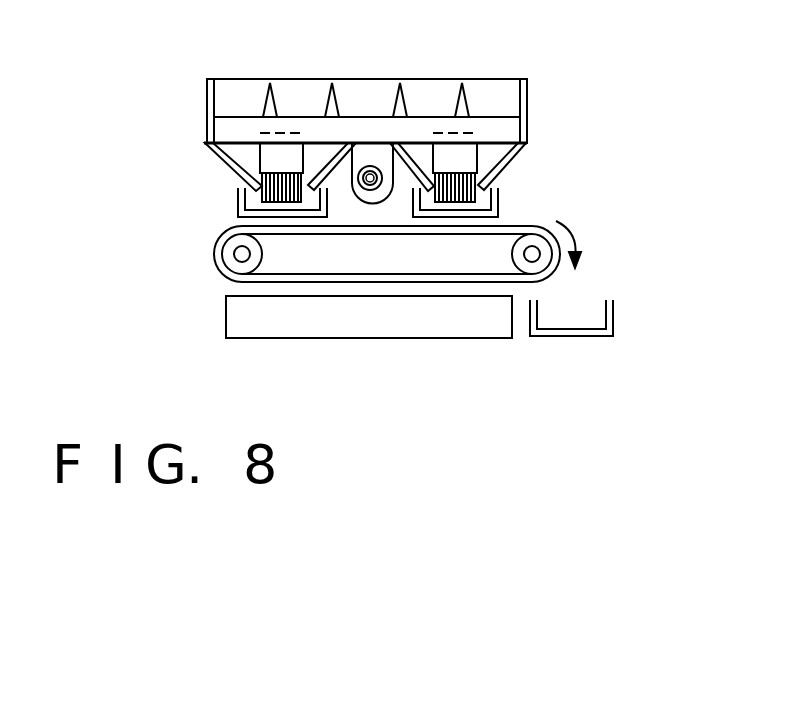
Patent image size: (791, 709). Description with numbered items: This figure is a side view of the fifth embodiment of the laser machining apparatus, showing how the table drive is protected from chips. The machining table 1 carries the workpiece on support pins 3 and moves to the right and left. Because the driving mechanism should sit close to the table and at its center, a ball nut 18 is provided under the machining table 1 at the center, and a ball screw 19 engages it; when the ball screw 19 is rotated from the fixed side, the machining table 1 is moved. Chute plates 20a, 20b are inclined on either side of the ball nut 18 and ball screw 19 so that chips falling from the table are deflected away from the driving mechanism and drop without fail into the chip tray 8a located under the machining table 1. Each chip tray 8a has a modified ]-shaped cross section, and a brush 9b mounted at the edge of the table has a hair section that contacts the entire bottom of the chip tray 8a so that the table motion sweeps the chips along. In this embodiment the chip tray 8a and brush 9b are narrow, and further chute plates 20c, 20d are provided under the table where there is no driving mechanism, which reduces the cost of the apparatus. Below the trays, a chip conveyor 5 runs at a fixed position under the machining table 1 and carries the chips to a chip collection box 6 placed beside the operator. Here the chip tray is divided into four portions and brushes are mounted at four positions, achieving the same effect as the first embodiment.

The machining table 1 is at (528, 100).
The support pins 3 is at (405, 108).
The chip conveyor 5 is at (226, 282).
The chip collection box 6 is at (613, 315).
The chip tray 8a is at (235, 216).
The brush 9b is at (250, 200).
The ball nut 18 is at (371, 165).
The ball screw 19 is at (369, 190).
The chute plate 20a is at (326, 163).
The chute plate 20b is at (412, 165).
The chute plate 20c is at (212, 163).
The support arm 20d is at (503, 161).